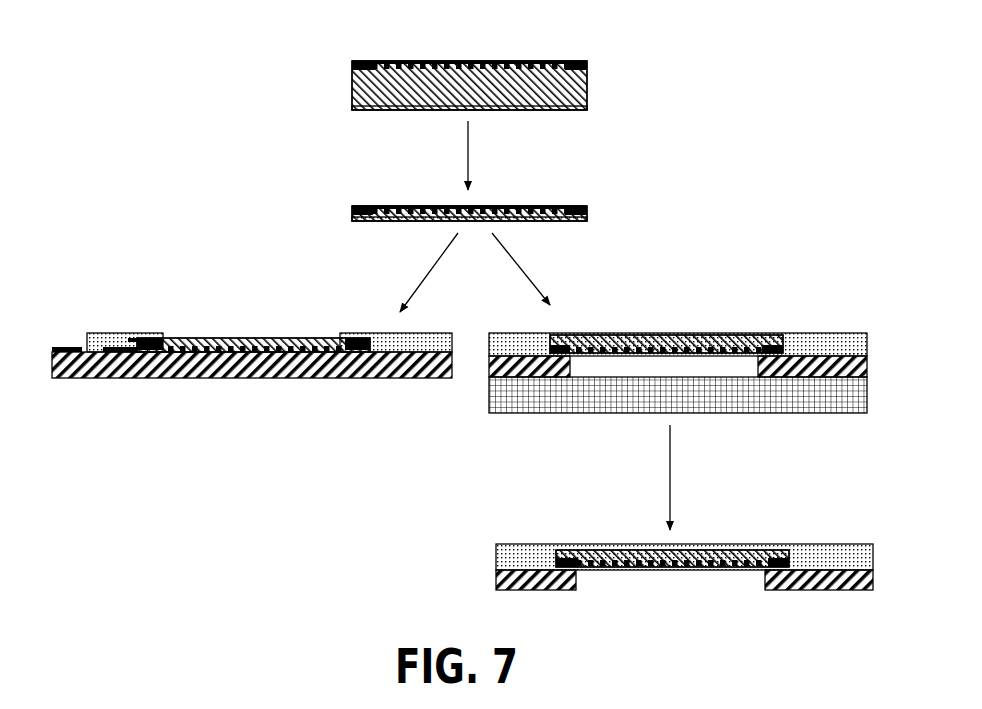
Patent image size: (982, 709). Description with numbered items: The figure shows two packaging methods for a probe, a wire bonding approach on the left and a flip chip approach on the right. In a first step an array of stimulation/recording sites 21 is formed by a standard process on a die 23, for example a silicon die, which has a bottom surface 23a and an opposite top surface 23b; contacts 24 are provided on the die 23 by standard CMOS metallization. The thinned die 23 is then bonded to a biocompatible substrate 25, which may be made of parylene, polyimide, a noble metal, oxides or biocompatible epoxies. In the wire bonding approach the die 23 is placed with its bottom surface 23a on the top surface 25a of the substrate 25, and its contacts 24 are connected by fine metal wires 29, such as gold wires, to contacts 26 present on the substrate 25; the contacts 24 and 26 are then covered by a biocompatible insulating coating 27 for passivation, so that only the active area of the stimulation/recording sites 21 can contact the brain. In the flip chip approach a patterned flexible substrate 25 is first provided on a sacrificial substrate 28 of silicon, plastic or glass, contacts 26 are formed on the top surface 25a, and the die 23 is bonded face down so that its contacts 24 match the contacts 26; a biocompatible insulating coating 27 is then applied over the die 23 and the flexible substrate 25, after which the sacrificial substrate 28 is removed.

The stimulation/recording sites 21 is at (517, 62).
The die 23 is at (577, 90).
The bottom surface of the die 23a is at (436, 183).
The top surface of the die 23b is at (445, 107).
The contacts 24 is at (352, 62).
The substrate 25 is at (323, 368).
The top surface of the substrate 25a is at (194, 348).
The contacts 26 is at (118, 352).
The biocompatible insulating coating 27 is at (112, 338).
The sacrificial substrate 28 is at (782, 412).
The wires 29 is at (132, 338).